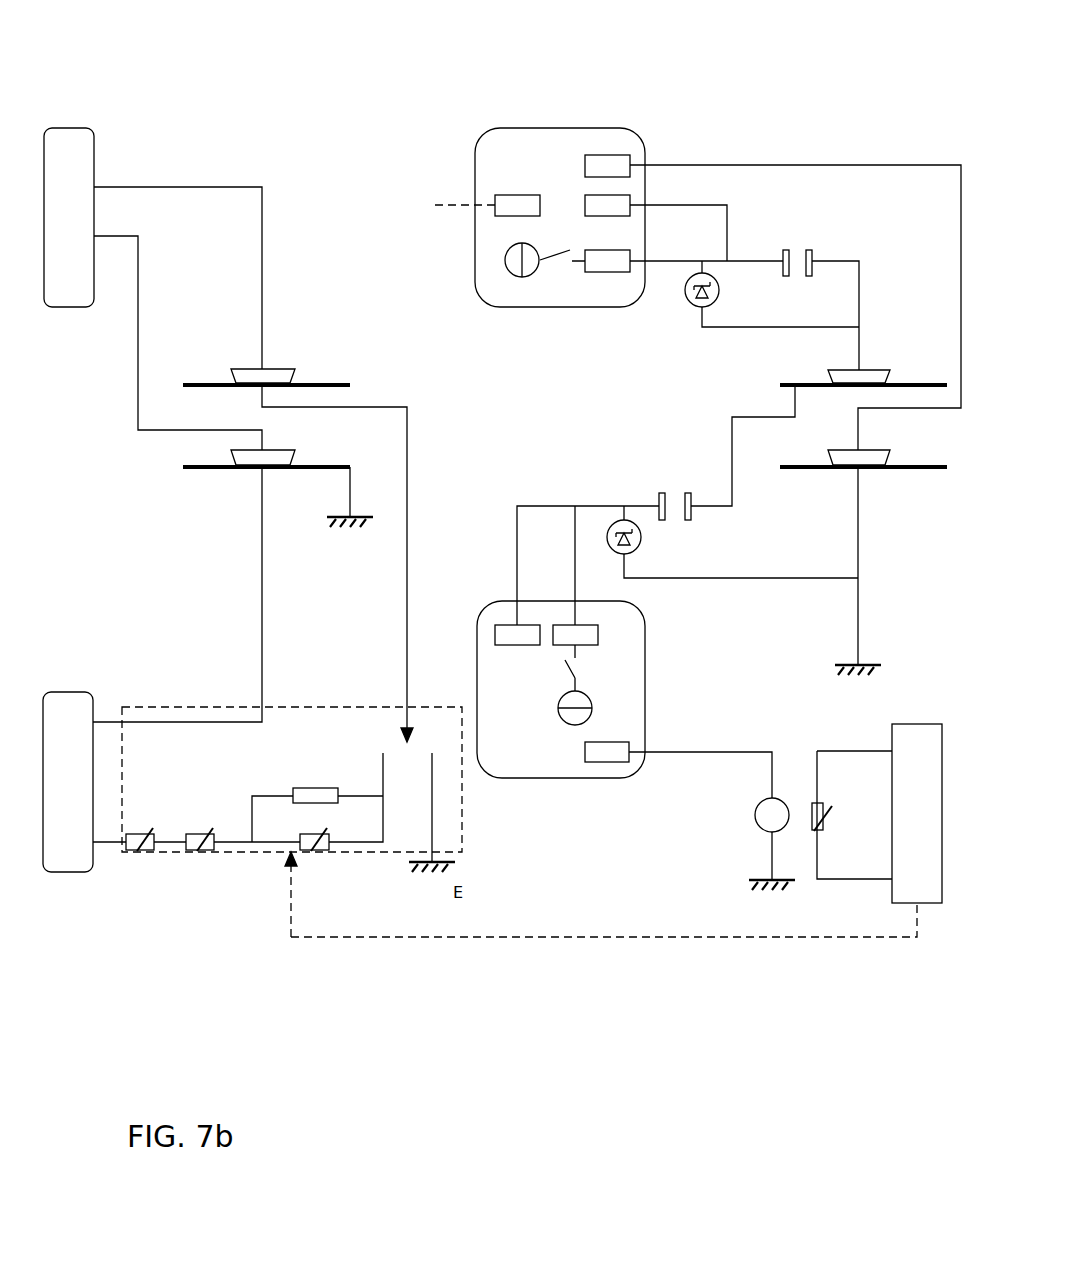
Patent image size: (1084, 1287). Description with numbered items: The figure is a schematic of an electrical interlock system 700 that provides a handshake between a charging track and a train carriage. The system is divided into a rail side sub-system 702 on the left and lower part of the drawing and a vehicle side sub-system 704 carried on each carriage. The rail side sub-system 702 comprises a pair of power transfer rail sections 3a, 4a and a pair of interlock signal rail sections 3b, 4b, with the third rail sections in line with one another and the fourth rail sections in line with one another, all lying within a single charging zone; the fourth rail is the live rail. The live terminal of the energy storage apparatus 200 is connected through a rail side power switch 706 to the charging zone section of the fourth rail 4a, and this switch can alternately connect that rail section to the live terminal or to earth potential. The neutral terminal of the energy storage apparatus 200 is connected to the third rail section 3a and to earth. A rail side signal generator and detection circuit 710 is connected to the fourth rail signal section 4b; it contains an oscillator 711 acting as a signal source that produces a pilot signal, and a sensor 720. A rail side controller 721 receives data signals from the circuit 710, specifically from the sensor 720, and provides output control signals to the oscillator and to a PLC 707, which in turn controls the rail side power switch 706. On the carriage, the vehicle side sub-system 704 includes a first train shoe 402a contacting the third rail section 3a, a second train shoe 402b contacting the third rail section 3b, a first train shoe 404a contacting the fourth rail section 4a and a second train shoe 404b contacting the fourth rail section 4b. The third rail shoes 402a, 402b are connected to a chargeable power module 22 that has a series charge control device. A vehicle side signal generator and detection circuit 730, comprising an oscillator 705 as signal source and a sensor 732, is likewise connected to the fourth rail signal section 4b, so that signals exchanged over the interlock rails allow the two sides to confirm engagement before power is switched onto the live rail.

The chargeable power module 22 is at (59, 219).
The energy storage apparatus 200 is at (54, 793).
The PLC 707 is at (902, 823).
The first train shoe 404a is at (277, 375).
The fourth rail section 4a is at (333, 383).
The first train shoe 402a is at (245, 456).
The third rail section 3a is at (215, 470).
The second train shoe 404b is at (845, 376).
The fourth rail section 4b is at (915, 383).
The second train shoe 402b is at (845, 456).
The third rail section 3b is at (810, 470).
The vehicle side signal generator and detection circuit 730 is at (475, 166).
The sensor 732 is at (610, 205).
The oscillator 705 is at (510, 265).
The vehicle side sub-system 704 is at (732, 125).
The rail side signal generator and detection circuit 710 is at (645, 700).
The sensor 720 is at (511, 636).
The oscillator 711 is at (570, 716).
The rail side controller 721 is at (727, 815).
The rail side power switch 706 is at (192, 853).
The rail side sub-system 702 is at (490, 1047).
The electrical interlock system 700 is at (698, 1143).